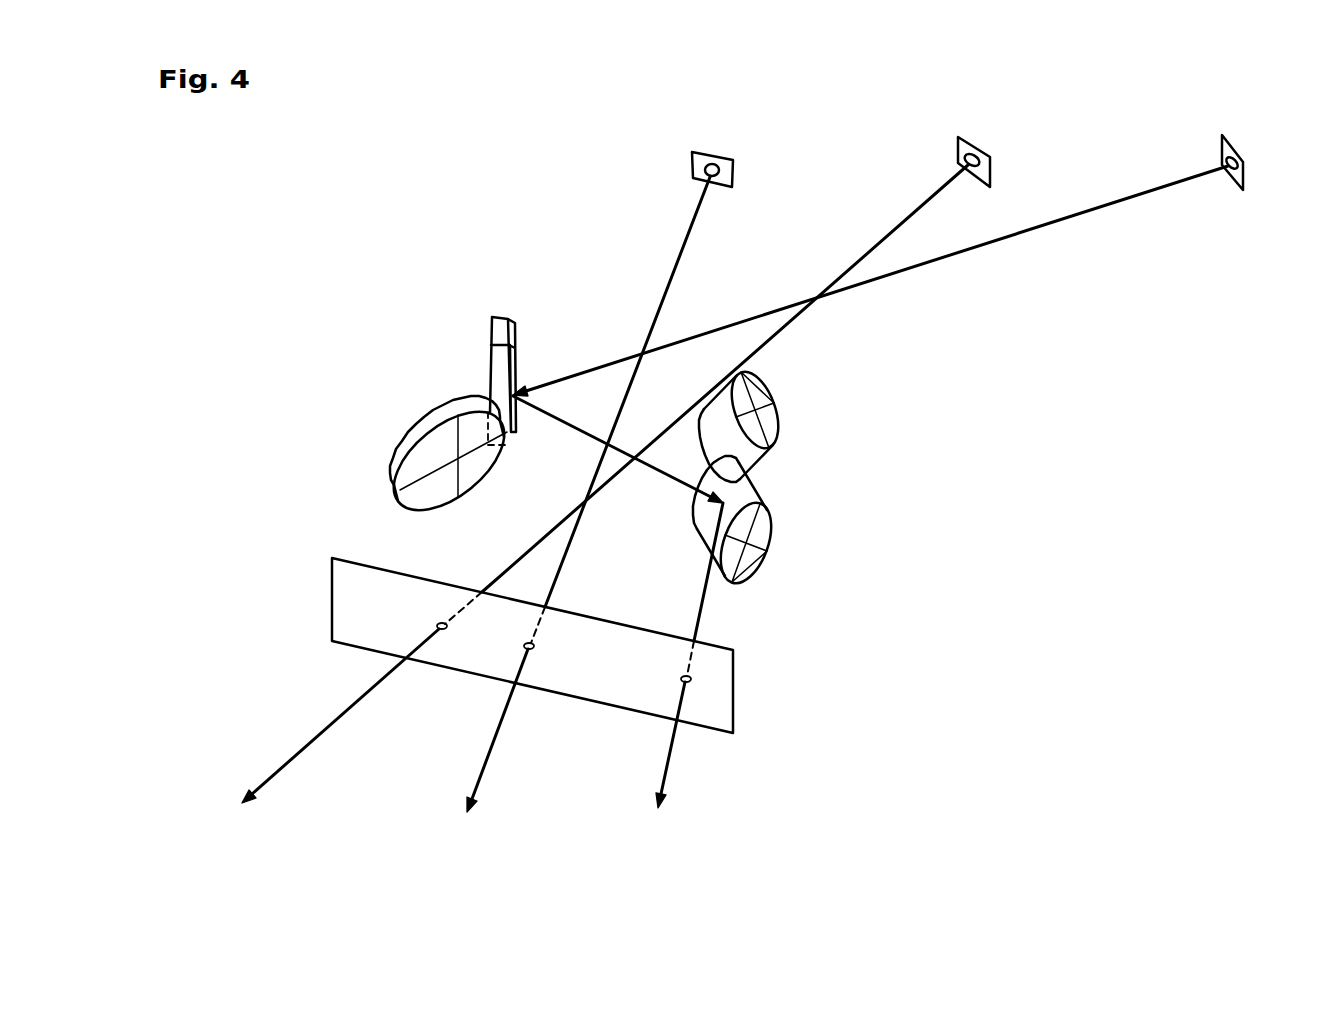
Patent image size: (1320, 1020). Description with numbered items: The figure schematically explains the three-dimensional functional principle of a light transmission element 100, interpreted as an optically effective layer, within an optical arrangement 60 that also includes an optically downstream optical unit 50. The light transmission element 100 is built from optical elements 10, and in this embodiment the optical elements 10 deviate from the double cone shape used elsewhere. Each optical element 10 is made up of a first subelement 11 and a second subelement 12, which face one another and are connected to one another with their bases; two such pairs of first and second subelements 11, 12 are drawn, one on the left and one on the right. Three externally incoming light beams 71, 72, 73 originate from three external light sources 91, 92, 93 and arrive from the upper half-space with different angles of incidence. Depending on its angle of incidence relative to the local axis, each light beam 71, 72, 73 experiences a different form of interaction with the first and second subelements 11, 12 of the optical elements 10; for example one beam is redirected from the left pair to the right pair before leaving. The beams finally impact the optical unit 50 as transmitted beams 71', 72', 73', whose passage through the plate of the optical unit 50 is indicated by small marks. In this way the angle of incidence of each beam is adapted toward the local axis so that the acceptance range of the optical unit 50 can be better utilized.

The light transmission element 100 is at (999, 476).
The optical arrangement 60 is at (393, 225).
The optical element 10 is at (332, 338).
The first subelement 11 is at (490, 362).
The second subelement 12 is at (417, 427).
The optical unit 50 is at (735, 692).
The light beam 71 is at (870, 334).
The light beam 72 is at (725, 378).
The light beam 73 is at (627, 392).
The transmitted beam 71' is at (655, 655).
The transmitted beam 72' is at (362, 697).
The transmitted beam 73' is at (477, 709).
The external light source 91 is at (692, 159).
The external light source 92 is at (987, 147).
The external light source 93 is at (1232, 185).